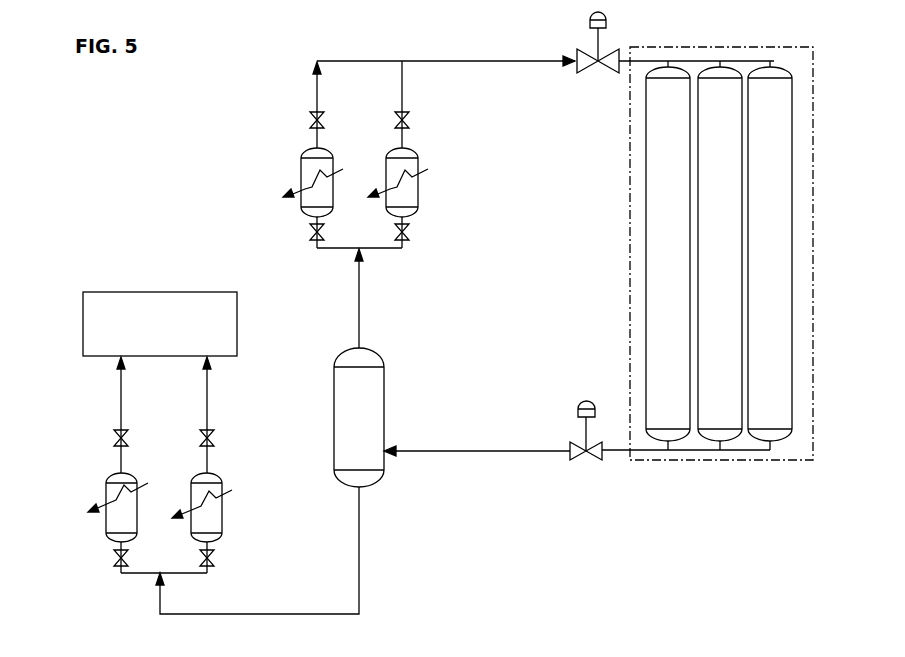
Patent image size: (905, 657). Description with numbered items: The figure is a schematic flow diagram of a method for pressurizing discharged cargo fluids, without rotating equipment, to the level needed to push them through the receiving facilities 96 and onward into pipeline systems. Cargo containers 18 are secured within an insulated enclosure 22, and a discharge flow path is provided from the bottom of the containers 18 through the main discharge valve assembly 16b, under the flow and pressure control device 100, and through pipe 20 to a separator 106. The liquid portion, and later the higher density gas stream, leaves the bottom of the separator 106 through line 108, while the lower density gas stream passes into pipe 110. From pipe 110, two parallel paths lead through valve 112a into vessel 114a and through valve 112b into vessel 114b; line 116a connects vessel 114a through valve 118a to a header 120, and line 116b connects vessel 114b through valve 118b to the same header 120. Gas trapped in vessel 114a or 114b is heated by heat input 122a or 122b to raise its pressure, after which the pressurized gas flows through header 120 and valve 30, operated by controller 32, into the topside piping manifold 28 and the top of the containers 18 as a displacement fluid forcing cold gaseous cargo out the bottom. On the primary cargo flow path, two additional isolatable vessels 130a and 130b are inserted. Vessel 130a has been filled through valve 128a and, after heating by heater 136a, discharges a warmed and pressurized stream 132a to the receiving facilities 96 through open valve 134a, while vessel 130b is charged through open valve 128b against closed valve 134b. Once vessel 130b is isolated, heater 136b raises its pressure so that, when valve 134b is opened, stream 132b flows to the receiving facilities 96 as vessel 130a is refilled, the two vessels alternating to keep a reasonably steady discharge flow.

The main discharge valve assembly 16b is at (575, 463).
The cargo containers 18 is at (737, 200).
The pipe 20 is at (612, 458).
The insulated enclosure 22 is at (813, 393).
The topside piping manifold 28 is at (647, 61).
The valve 30 is at (613, 72).
The controller 32 is at (588, 20).
The receiving facilities 96 is at (120, 292).
The flow and pressure control device 100 is at (580, 405).
The separator 106 is at (384, 420).
The line 108 is at (360, 585).
The pipe 110 is at (359, 315).
The valve 112a is at (308, 240).
The valve 112b is at (410, 238).
The vessel 114a is at (301, 213).
The vessel 114b is at (418, 205).
The line 116a is at (317, 83).
The line 116b is at (402, 103).
The valve 118a is at (310, 120).
The valve 118b is at (410, 120).
The header 120 is at (334, 61).
The heat input 122a is at (288, 192).
The heat input 122b is at (428, 168).
The valve 128a is at (112, 568).
The valve 128b is at (215, 568).
The vessel 130a is at (106, 525).
The vessel 130b is at (222, 533).
The warmed and pressurized stream 132a is at (121, 410).
The warmed and pressurized stream 132b is at (207, 400).
The valve 134a is at (115, 447).
The valve 134b is at (215, 440).
The heater 136a is at (88, 510).
The heater 136b is at (232, 490).